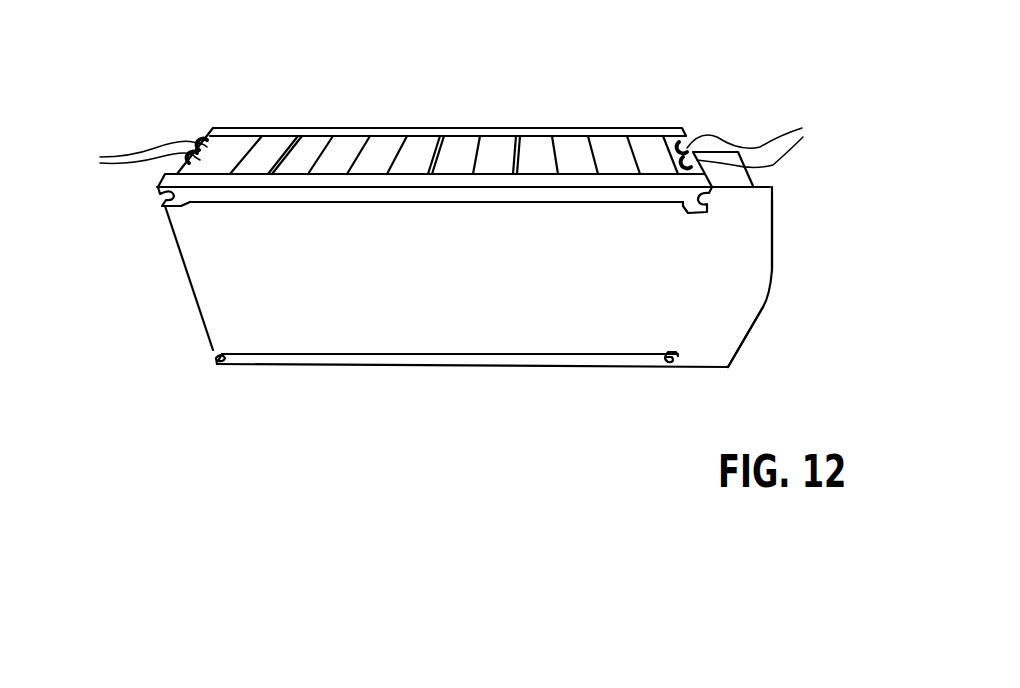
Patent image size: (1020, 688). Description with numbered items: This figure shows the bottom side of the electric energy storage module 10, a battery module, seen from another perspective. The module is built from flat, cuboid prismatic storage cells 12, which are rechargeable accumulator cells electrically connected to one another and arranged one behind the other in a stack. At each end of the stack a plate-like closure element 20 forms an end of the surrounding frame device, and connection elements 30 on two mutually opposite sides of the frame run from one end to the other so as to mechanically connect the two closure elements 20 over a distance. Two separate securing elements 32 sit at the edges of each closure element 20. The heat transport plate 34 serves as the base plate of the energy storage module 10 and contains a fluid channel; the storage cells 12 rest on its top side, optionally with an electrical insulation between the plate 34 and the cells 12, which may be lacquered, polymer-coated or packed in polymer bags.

The electric energy storage module 10 is at (765, 106).
The storage cells 12 is at (428, 138).
The closure elements 20 is at (210, 140).
The connection elements 30 is at (238, 131).
The securing elements 32 is at (447, 143).
The heat transport plate 34 is at (717, 345).